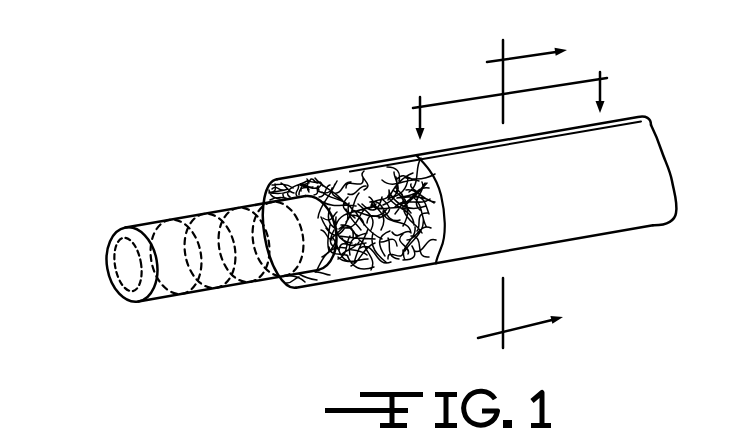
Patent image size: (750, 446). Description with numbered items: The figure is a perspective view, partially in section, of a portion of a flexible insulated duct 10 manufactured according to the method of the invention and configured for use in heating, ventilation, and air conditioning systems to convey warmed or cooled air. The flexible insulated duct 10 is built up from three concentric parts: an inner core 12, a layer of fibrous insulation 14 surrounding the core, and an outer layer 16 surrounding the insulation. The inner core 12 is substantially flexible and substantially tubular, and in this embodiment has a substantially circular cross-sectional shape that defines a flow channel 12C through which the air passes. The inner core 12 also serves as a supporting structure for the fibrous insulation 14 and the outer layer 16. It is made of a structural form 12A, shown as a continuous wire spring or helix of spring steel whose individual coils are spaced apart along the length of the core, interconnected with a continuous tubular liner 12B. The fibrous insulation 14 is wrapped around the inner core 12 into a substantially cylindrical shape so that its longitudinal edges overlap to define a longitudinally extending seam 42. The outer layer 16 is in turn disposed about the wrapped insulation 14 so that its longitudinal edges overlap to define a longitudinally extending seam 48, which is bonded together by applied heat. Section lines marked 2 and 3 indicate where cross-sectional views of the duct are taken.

The flexible insulated duct 10 is at (262, 121).
The inner core 12 is at (136, 206).
The structural form 12A is at (233, 224).
The continuous tubular liner 12B is at (224, 273).
The flow channel 12C is at (126, 256).
The layer of fibrous insulation 14 is at (377, 275).
The outer layer 16 is at (648, 165).
The longitudinally extending seam 42 is at (353, 167).
The longitudinally extending seam 48 is at (523, 142).
The section line 2- 2 is at (522, 188).
The section line 3- 3 is at (511, 107).